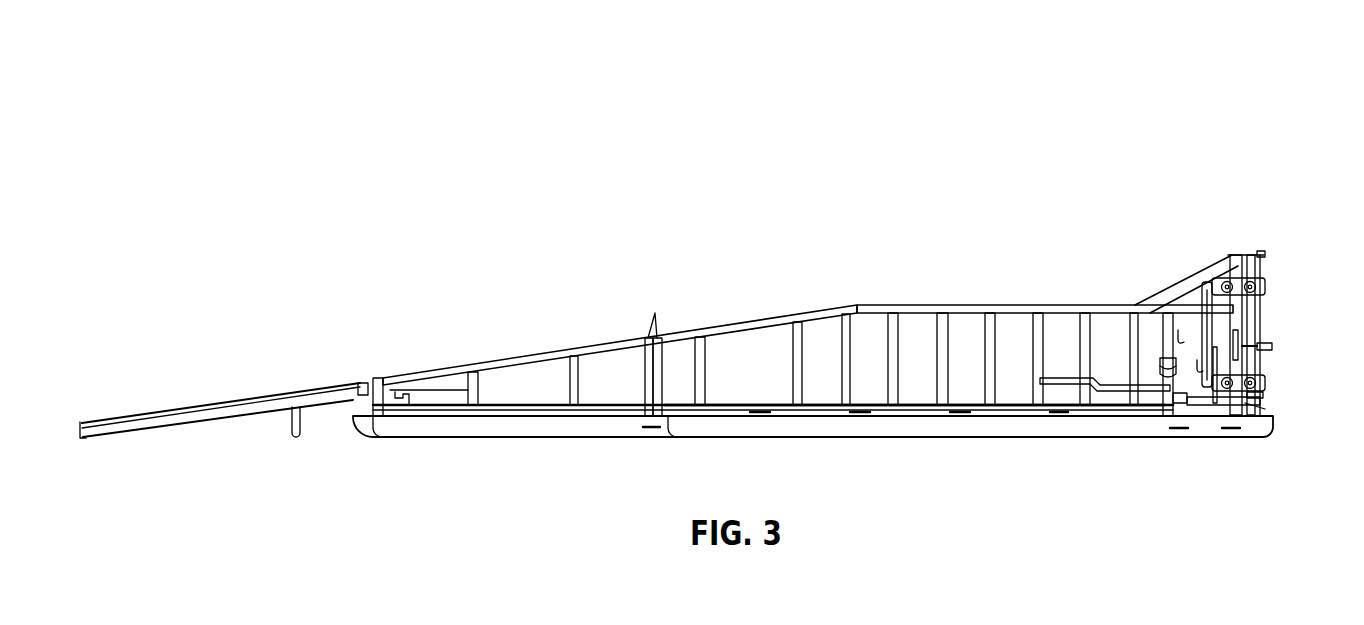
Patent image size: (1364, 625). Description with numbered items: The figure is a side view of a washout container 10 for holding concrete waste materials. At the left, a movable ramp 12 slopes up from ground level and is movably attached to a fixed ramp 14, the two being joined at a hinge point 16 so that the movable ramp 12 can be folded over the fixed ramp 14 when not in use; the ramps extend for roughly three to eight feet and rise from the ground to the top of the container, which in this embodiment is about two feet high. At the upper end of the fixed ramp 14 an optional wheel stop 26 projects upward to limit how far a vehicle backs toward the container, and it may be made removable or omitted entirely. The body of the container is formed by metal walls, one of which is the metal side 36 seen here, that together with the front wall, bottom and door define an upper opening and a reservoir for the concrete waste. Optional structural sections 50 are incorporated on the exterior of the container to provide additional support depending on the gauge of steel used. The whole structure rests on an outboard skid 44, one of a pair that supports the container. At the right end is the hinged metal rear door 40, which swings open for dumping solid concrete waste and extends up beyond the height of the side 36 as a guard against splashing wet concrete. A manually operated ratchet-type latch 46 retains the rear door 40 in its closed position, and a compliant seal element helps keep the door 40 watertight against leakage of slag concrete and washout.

The washout container 10 is at (370, 78).
The movable ramp 12 is at (173, 380).
The fixed ramp 14 is at (503, 320).
The hinge point 16 is at (371, 380).
The wheel stop 26 is at (650, 328).
The metal side 36 is at (818, 385).
The rear door 40 is at (1268, 250).
The outboard skid 44 is at (730, 432).
The ratchet-type latch 46 is at (1240, 385).
The structural section 50 is at (945, 330).